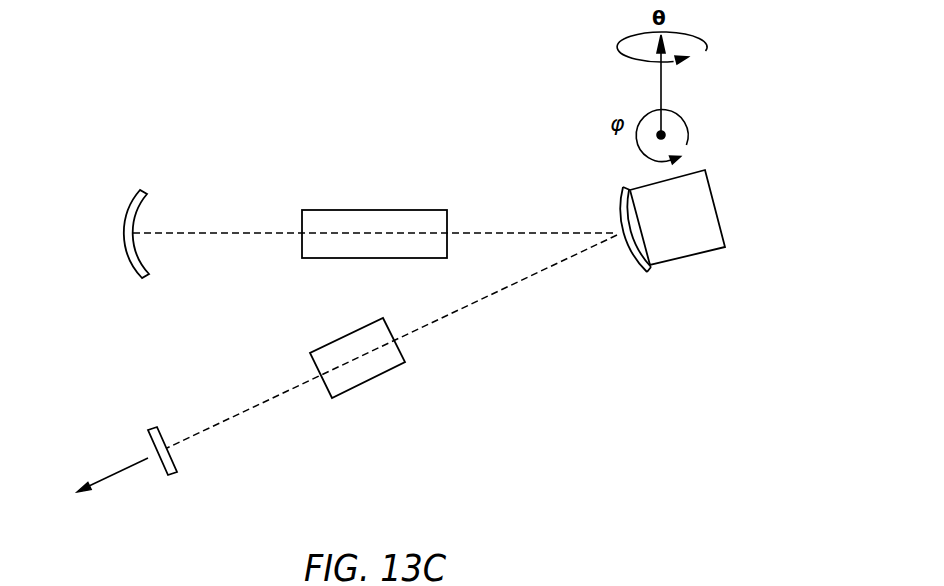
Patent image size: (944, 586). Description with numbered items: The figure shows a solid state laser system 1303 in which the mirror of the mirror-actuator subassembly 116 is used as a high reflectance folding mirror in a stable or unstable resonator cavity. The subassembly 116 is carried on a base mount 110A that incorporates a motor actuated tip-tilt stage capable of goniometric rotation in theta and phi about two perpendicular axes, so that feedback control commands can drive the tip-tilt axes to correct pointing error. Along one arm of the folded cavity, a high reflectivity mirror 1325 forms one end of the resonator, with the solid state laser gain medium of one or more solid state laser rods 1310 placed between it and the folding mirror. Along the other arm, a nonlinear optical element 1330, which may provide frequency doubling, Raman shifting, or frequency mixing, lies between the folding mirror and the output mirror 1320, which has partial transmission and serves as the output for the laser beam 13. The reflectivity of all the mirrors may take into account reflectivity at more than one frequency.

The output light beam 13 is at (113, 470).
The mirror-actuator subassembly 116 is at (622, 194).
The base mount 110A is at (690, 256).
The optical system 1303 is at (663, 364).
The solid state laser rods 1310 is at (420, 210).
The output mirror 1320 is at (172, 475).
The mirror 1325 is at (128, 213).
The nonlinear optical element 1330 is at (390, 367).